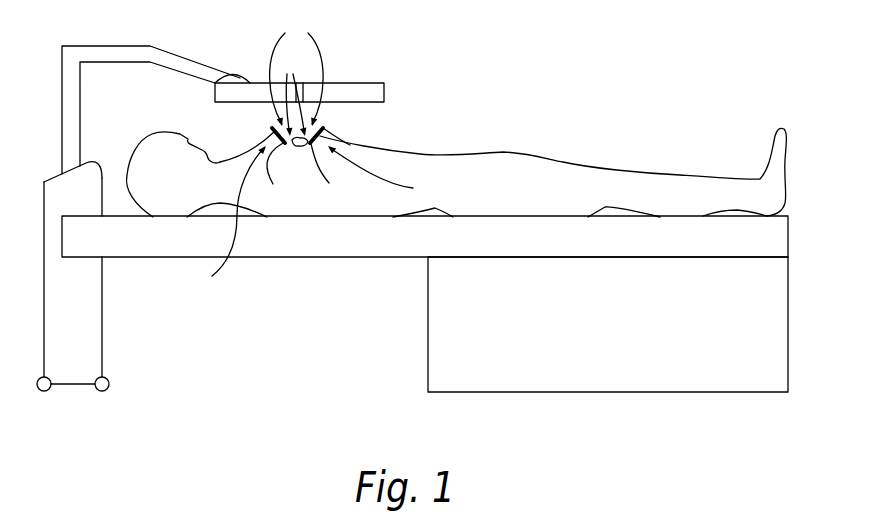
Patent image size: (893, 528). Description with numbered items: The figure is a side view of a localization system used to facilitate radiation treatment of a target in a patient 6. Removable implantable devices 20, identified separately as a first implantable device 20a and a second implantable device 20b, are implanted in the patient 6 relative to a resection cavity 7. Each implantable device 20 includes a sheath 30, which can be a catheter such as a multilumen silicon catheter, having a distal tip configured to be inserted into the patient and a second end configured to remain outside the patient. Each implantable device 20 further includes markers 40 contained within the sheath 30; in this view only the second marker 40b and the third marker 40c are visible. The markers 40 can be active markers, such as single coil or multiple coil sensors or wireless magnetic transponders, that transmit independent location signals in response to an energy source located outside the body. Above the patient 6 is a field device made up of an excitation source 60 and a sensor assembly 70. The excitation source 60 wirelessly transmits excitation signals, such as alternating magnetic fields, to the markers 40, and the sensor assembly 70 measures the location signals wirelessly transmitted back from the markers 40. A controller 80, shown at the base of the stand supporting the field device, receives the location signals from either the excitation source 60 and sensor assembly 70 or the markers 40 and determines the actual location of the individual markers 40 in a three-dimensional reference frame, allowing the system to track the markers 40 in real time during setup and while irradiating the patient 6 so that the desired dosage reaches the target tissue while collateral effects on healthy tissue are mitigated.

The patient 6 is at (422, 152).
The resection cavity 7 is at (299, 148).
The implantable device 20 is at (297, 69).
The first implantable device 20a is at (224, 223).
The second implantable device 20b is at (388, 173).
The sheath 30 is at (272, 131).
The markers 40 is at (294, 94).
The second marker 40b is at (334, 173).
The third marker 40c is at (283, 174).
The excitation source 60 is at (327, 73).
The sensor assembly 70 is at (350, 83).
The controller 80 is at (93, 343).